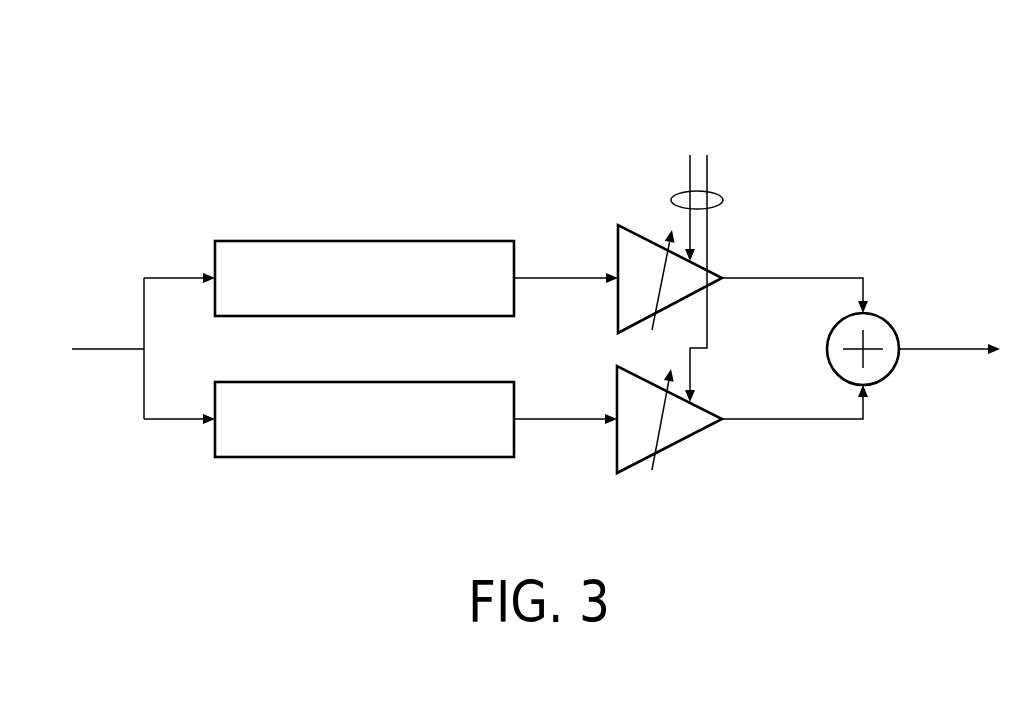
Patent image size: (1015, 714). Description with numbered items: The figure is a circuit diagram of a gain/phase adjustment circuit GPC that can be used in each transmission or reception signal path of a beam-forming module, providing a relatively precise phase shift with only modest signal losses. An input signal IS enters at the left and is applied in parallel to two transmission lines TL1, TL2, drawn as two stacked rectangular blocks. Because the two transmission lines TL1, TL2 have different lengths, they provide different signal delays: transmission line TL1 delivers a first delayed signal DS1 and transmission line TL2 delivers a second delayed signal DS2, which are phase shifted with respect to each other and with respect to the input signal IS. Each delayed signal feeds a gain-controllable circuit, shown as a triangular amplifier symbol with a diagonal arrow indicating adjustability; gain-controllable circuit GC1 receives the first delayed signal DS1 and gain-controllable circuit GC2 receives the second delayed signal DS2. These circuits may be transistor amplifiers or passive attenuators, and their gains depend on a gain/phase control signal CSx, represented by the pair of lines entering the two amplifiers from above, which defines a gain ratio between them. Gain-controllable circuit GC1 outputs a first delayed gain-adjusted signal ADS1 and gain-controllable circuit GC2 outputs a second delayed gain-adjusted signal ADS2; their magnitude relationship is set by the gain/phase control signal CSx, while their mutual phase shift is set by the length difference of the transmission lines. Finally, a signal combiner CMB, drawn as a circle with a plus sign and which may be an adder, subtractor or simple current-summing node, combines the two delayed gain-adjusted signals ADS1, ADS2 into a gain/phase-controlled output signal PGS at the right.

The gain/phase adjustment circuit GPC is at (225, 73).
The input signal IS is at (143, 348).
The transmission line TL1 is at (365, 248).
The transmission line TL2 is at (365, 457).
The first delayed signal DS1 is at (566, 265).
The second delayed signal DS2 is at (565, 405).
The gain-controllable circuit GC1 is at (632, 245).
The gain-controllable circuit GC2 is at (633, 452).
The gain/phase control signal CSx is at (723, 200).
The first delayed gain-adjusted signal ADS1 is at (795, 276).
The second delayed gain-adjusted signal ADS2 is at (795, 399).
The signal combiner CMB is at (882, 370).
The gain/phase-controlled output signal PGS is at (949, 335).